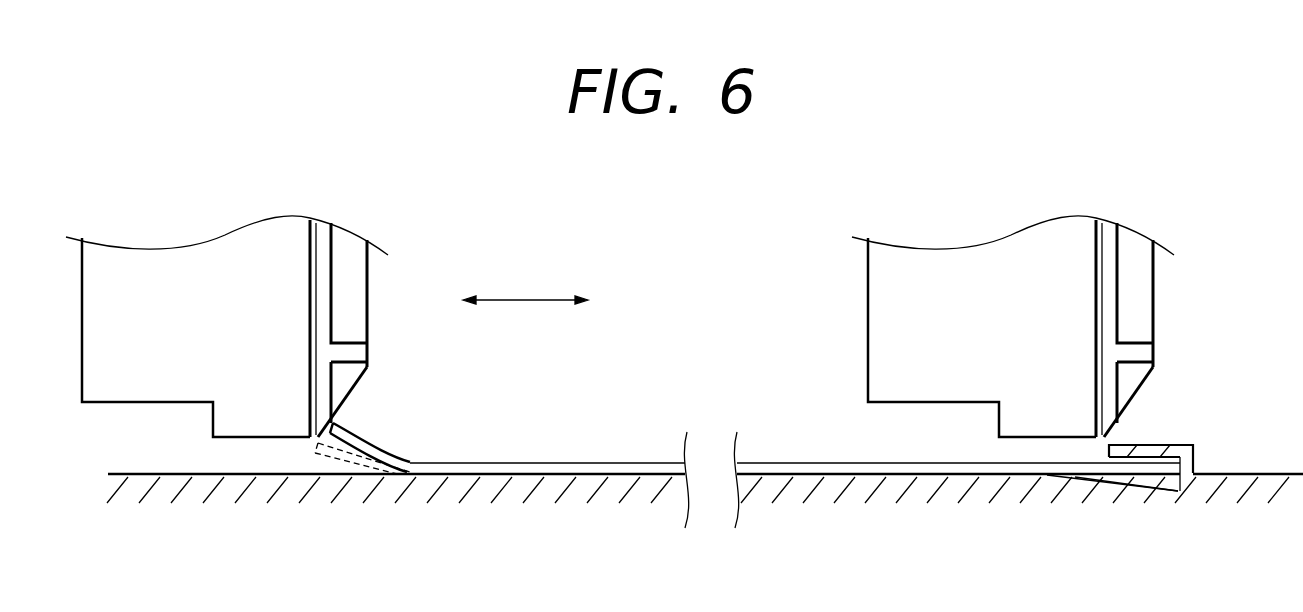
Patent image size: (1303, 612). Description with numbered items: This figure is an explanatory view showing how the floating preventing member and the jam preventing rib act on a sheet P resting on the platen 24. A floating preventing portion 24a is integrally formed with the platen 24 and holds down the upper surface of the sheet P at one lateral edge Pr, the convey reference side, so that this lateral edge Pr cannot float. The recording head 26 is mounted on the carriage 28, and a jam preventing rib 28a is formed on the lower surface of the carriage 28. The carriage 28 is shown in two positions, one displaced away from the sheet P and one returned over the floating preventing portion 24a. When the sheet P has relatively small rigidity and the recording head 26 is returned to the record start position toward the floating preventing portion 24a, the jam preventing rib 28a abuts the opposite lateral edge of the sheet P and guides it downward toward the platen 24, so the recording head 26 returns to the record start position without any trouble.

The recording head 26 is at (220, 243).
The carriage 28 is at (348, 285).
The jam preventing rib 28a is at (353, 392).
The platen 24 is at (953, 490).
The floating preventing portion 24a is at (1180, 447).
The sheet P is at (815, 468).
The lateral edge of the sheet Pr is at (1182, 462).